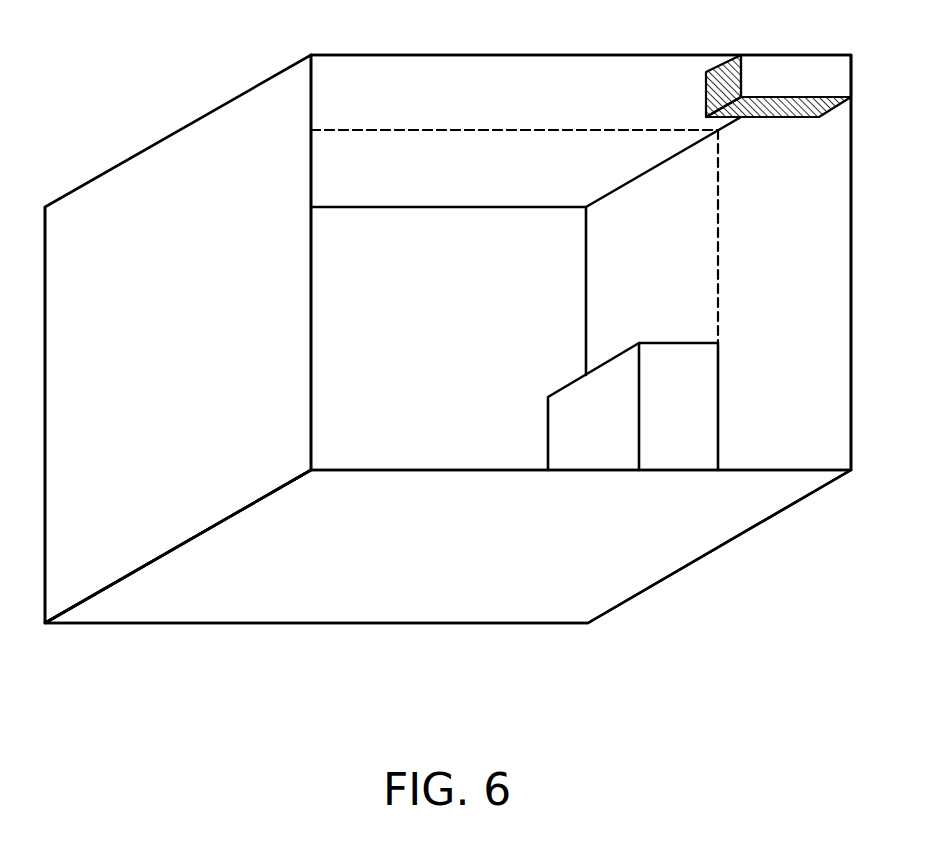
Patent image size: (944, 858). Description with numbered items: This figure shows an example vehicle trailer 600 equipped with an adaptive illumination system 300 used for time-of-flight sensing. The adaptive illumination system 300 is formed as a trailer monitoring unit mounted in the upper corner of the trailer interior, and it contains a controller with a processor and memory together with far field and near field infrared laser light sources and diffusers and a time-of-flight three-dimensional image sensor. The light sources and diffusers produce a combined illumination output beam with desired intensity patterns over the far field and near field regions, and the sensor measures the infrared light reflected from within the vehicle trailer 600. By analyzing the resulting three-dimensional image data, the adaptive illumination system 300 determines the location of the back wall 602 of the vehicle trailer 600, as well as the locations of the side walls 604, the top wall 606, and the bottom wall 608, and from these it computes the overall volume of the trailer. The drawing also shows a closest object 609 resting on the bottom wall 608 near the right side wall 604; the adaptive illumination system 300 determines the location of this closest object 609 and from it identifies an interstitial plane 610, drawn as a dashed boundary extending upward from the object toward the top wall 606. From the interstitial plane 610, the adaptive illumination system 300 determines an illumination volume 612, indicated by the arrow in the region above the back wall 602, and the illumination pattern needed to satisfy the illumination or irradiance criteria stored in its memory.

The vehicle trailer 600 is at (352, 55).
The adaptive illumination system 300 is at (800, 55).
The back wall 602 is at (470, 352).
The side walls 604 is at (200, 352).
The top wall 606 is at (497, 103).
The bottom wall 608 is at (470, 561).
The closest object 609 is at (700, 417).
The interstitial plane 610 is at (718, 292).
The illumination volume 612 is at (319, 174).